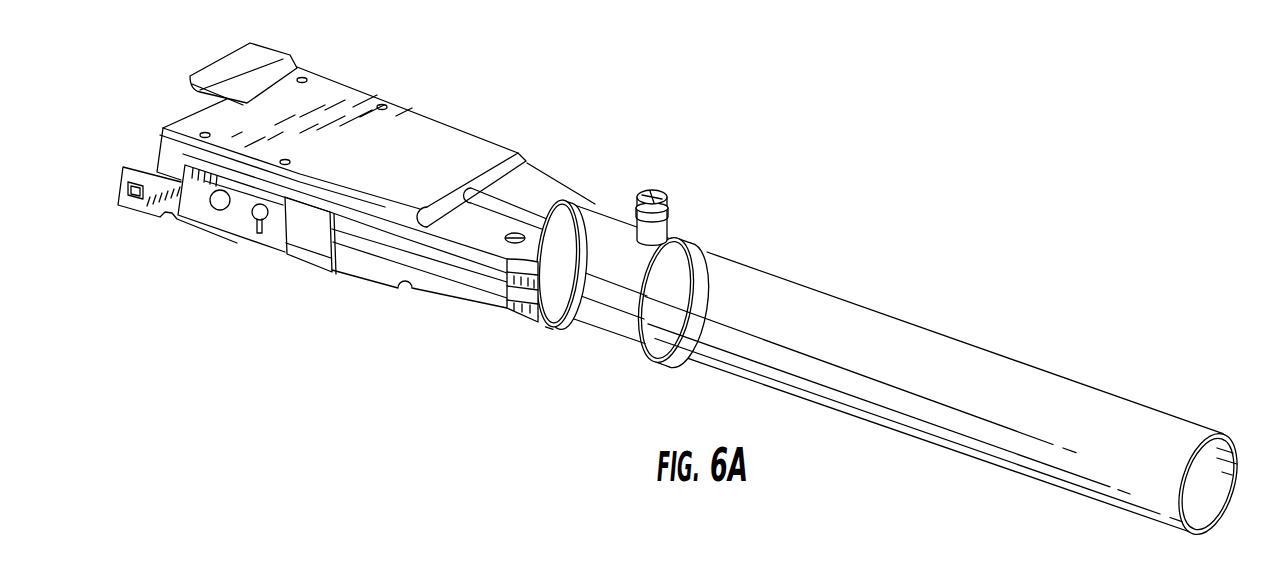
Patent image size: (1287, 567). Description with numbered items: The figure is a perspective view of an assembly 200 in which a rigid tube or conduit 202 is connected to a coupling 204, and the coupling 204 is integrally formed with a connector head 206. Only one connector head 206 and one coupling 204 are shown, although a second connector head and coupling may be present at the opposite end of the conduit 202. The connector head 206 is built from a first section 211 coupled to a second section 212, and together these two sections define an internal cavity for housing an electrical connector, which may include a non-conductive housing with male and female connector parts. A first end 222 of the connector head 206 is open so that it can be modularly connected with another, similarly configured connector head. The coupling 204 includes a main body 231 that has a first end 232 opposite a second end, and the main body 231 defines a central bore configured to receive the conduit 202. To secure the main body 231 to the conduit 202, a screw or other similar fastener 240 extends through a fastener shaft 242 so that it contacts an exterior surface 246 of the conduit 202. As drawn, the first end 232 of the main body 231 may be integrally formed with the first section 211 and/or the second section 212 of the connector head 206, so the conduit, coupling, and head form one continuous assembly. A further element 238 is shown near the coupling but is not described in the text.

The assembly 200 is at (672, 292).
The conduit 202 is at (1002, 375).
The coupling 204 is at (622, 356).
The connector head 206 is at (273, 277).
The first section 211 is at (447, 135).
The second section 212 is at (397, 281).
The first end 222 is at (133, 224).
The main body 231 is at (621, 233).
The first end 232 is at (540, 332).
The clamp ring 238 is at (712, 245).
The fastener 240 is at (662, 191).
The fastener shaft 242 is at (670, 224).
The exterior surface 246 is at (838, 298).